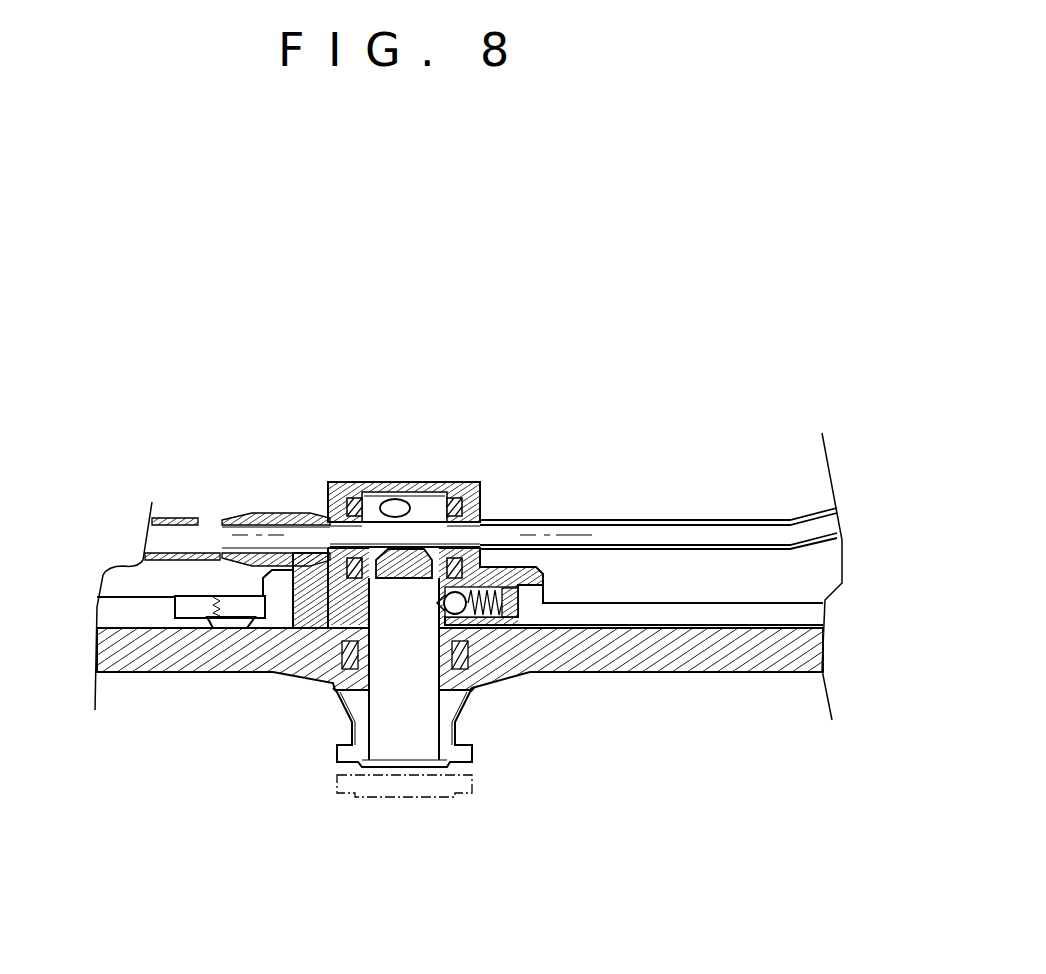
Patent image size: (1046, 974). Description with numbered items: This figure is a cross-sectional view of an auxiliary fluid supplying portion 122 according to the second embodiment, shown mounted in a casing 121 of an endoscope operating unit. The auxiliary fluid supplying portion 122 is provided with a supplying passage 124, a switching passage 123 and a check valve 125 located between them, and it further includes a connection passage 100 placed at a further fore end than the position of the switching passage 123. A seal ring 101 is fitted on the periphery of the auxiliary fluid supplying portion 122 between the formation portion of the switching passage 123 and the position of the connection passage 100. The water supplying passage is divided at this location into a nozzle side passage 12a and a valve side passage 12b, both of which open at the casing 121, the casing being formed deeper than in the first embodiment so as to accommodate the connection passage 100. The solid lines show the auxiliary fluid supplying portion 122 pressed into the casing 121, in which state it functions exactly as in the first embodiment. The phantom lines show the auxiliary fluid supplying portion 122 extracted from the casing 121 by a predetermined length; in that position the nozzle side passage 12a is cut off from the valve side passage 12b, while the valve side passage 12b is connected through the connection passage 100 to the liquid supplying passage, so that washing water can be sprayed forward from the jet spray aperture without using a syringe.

The valve side passage 12b is at (190, 520).
The nozzle side passage 12a is at (770, 513).
The connection passage 100 is at (398, 506).
The seal ring 101 is at (355, 492).
The casing 121 is at (467, 493).
The switching passage 123 is at (367, 540).
The check valve 125 is at (357, 582).
The supplying passage 124 is at (398, 617).
The auxiliary fluid supplying portion 122 is at (477, 757).